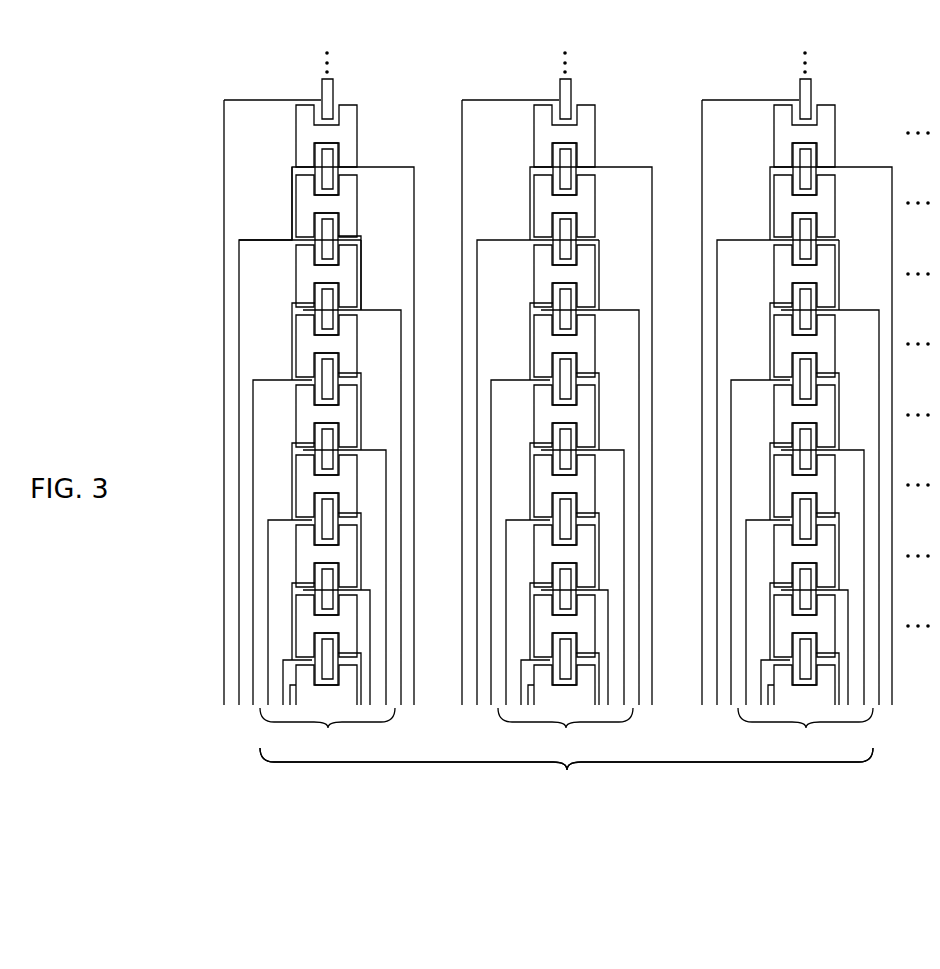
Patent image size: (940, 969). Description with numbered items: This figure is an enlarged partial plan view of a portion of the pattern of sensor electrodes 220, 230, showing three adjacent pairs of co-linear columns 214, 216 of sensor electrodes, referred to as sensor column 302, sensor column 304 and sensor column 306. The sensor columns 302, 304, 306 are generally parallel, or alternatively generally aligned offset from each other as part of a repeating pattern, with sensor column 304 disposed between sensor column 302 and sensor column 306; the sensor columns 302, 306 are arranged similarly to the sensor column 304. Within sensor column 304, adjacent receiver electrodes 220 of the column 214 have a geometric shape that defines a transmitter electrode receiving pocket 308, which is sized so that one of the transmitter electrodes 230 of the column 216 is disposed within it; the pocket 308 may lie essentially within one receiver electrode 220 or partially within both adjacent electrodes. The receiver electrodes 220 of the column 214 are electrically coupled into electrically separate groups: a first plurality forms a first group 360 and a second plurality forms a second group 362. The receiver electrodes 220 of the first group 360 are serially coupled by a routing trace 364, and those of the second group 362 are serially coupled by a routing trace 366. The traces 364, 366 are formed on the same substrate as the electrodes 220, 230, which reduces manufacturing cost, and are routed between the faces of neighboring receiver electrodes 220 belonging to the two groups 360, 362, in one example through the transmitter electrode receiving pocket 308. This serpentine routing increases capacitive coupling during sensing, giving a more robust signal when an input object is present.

The receiver electrode 220 is at (850, 201).
The transmitter electrode 230 is at (806, 155).
The transmitter electrode receiving pocket 308 is at (819, 157).
The first group 360 is at (423, 642).
The second group 362 is at (423, 613).
The routing trace 364 is at (293, 190).
The routing trace 366 is at (358, 240).
The sensor column 302 is at (327, 731).
The sensor column 304 is at (565, 731).
The sensor column 306 is at (805, 731).
The column 214 is at (566, 772).
The column 216 is at (566, 759).